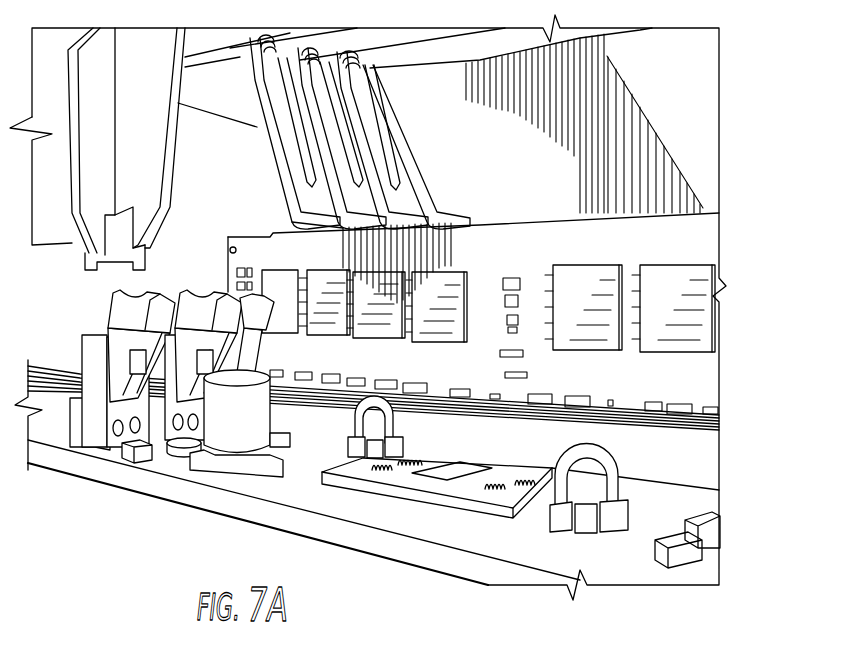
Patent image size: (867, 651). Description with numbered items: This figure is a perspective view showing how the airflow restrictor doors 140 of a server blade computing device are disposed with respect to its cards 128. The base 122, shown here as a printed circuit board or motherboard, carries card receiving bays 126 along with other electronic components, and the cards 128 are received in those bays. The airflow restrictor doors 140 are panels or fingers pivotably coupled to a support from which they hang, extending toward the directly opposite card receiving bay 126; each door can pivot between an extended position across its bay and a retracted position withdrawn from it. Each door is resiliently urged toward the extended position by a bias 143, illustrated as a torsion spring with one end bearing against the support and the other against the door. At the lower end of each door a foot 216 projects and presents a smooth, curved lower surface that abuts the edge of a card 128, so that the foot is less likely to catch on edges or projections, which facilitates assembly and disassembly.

The base 122 is at (472, 485).
The card receiving bays 126 is at (693, 458).
The cards 128 is at (548, 198).
The airflow restrictor doors 140 is at (275, 158).
The bias 143 is at (397, 186).
The foot 216 is at (325, 210).